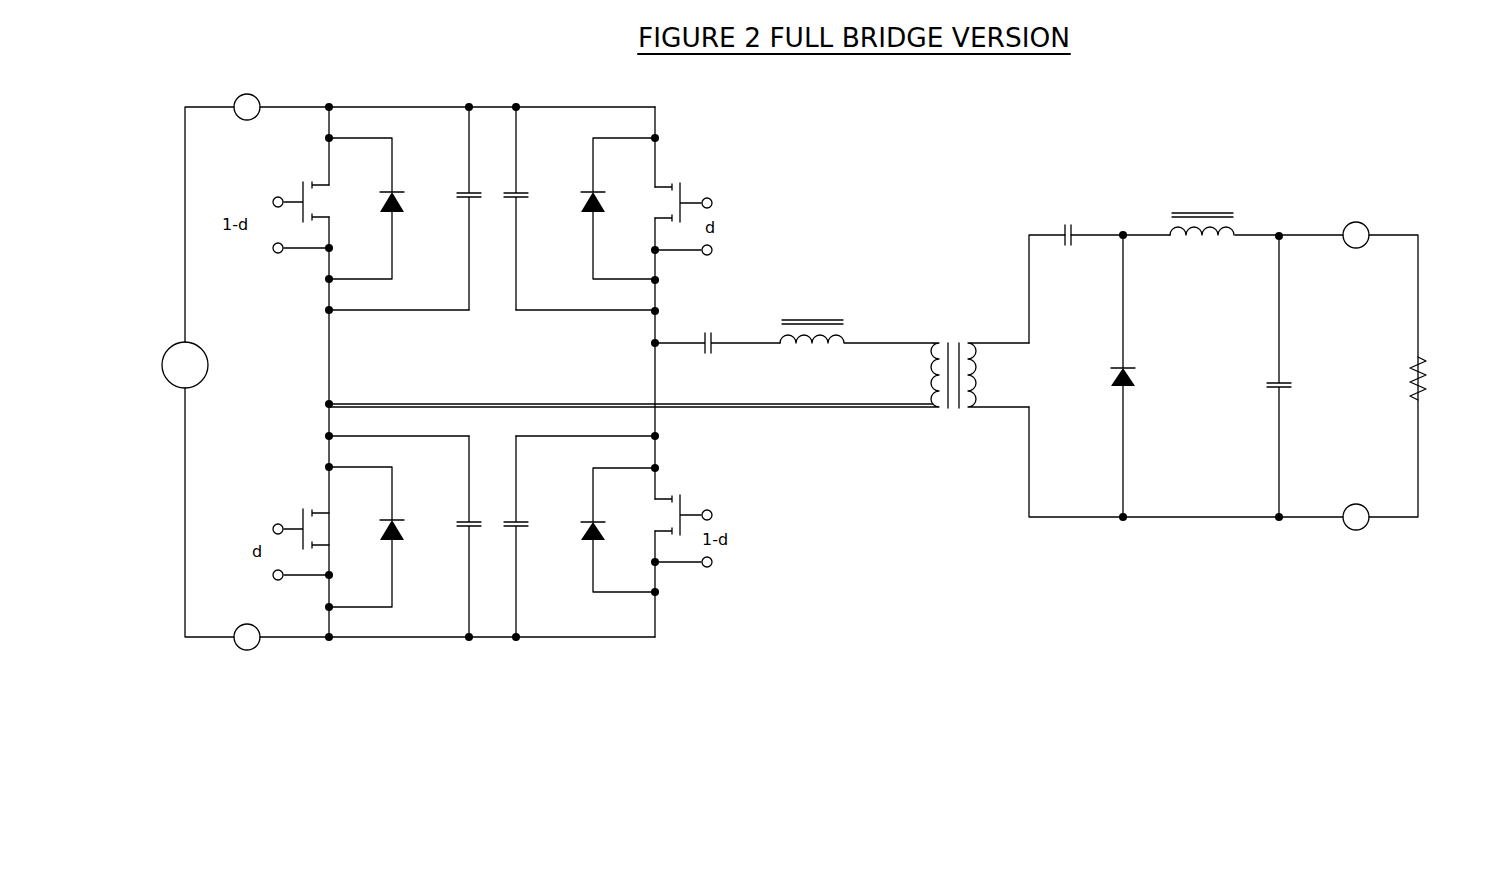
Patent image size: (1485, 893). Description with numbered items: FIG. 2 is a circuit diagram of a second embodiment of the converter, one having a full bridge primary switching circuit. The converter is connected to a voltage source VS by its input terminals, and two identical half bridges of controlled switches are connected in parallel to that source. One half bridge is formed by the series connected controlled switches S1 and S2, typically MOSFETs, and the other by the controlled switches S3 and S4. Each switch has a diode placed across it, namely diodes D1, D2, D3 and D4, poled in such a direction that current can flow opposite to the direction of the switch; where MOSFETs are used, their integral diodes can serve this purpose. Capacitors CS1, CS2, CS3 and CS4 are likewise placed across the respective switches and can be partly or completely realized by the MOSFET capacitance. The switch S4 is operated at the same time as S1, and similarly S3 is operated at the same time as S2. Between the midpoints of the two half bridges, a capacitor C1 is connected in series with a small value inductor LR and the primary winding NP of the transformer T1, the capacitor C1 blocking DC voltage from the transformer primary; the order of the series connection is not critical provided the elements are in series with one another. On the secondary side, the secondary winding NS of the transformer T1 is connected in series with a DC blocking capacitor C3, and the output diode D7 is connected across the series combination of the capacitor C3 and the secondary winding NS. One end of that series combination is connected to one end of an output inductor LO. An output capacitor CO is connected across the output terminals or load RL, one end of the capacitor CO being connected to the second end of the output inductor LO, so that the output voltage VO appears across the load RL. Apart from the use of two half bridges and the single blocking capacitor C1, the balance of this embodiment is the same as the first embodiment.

The voltage source VS is at (165, 359).
The controlled switch S1 is at (691, 213).
The controlled switch S2 is at (691, 525).
The controlled switch S3 is at (291, 210).
The controlled switch S4 is at (290, 536).
The diode D1 is at (618, 208).
The diode D2 is at (618, 530).
The diode D3 is at (366, 208).
The diode D4 is at (366, 537).
The capacitor CS1 is at (534, 208).
The capacitor CS2 is at (533, 536).
The capacitor CS3 is at (454, 208).
The capacitor CS4 is at (453, 536).
The capacitor C1 is at (717, 333).
The inductor LR is at (856, 320).
The transformer T1 is at (679, 360).
The primary winding NP is at (634, 375).
The secondary winding NS is at (998, 375).
The DC blocking capacitor C3 is at (1055, 221).
The output diode D7 is at (1106, 376).
The output inductor LO is at (1202, 206).
The output capacitor CO is at (1294, 376).
The load RL is at (1399, 378).
The output voltage VO is at (1408, 376).